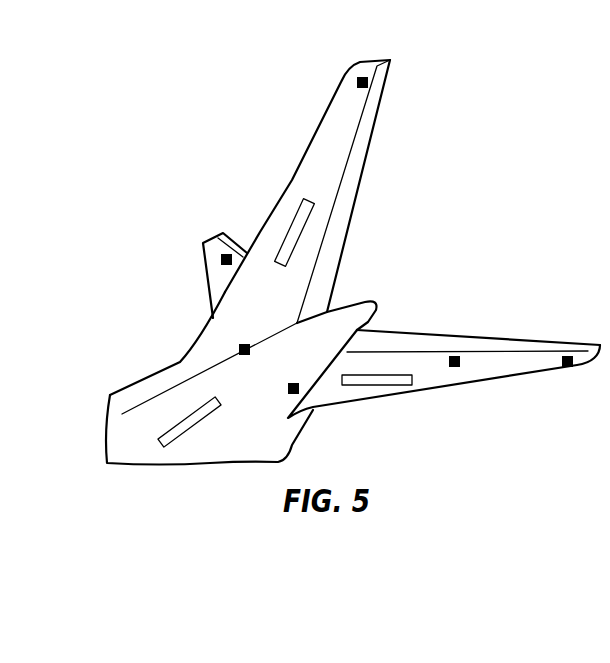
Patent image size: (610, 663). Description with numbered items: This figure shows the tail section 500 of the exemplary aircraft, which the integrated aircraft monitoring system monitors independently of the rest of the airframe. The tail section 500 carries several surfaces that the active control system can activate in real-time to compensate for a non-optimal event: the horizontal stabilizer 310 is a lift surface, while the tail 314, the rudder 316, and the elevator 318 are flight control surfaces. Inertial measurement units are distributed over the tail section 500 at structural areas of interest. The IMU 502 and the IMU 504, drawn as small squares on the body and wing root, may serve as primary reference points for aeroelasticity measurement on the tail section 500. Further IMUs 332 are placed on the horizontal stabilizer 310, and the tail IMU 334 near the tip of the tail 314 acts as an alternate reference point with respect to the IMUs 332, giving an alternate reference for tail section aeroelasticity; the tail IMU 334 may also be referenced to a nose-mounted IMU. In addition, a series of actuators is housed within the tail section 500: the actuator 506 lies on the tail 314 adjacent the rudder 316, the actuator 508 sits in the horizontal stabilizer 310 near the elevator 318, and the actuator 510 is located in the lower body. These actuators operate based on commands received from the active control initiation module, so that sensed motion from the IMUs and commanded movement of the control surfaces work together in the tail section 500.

The tail section 500 is at (179, 134).
The horizontal stabilizer 310 is at (210, 273).
The tail 314 is at (302, 161).
The rudder 316 is at (347, 183).
The elevator 318 is at (400, 340).
The IMU 332 is at (230, 253).
The tail IMU 334 is at (363, 77).
The IMU 502 is at (243, 357).
The IMU 504 is at (293, 395).
The actuator 506 is at (310, 230).
The actuator 508 is at (377, 386).
The actuator 510 is at (172, 428).